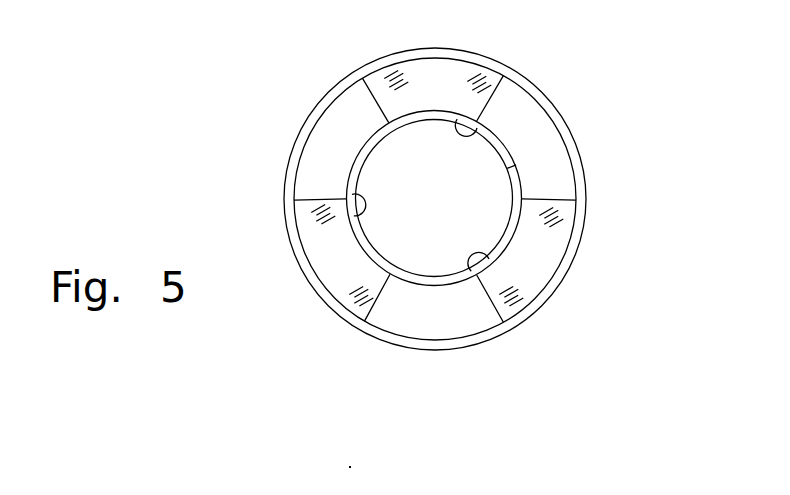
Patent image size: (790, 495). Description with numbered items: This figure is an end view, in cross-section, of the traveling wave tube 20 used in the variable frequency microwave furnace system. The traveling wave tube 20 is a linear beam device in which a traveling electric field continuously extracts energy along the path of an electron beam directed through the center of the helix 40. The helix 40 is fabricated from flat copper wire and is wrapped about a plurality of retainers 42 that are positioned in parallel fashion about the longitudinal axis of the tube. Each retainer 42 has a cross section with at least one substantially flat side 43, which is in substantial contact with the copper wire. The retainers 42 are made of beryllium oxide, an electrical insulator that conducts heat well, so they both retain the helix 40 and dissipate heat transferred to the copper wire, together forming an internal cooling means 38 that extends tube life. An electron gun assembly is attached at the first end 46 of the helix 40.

The traveling wave tube 20 is at (609, 92).
The internal cooling means 38 is at (402, 319).
The helix 40 is at (365, 140).
The retainers 42 is at (448, 96).
The flat side 43 is at (481, 122).
The first end 46 is at (518, 171).